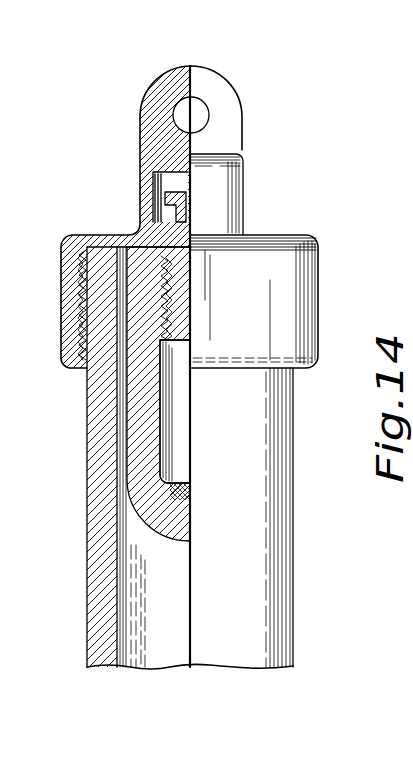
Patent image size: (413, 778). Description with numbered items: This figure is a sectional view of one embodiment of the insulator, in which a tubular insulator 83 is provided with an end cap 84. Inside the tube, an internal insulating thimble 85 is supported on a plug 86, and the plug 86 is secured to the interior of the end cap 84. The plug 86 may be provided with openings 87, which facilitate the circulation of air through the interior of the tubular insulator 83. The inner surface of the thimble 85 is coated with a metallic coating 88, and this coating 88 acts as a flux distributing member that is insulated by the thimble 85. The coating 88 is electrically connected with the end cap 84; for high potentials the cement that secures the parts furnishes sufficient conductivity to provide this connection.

The tubular insulator 83 is at (97, 610).
The end cap 84 is at (98, 236).
The internal insulating thimble 85 is at (142, 403).
The plug 86 is at (175, 307).
The openings 87 is at (192, 250).
The metallic coating 88 is at (173, 450).